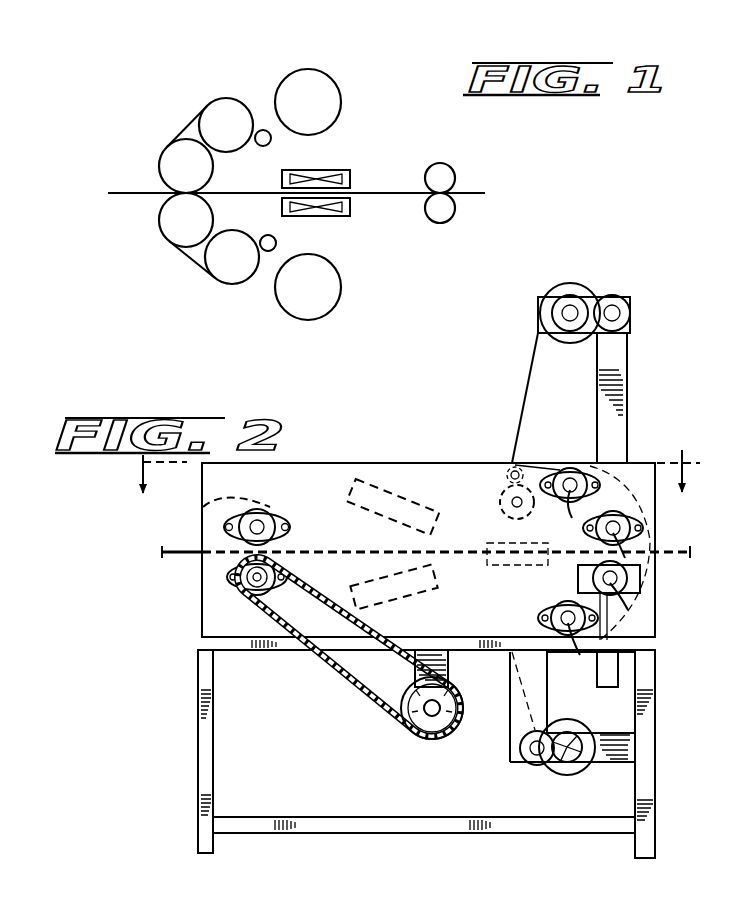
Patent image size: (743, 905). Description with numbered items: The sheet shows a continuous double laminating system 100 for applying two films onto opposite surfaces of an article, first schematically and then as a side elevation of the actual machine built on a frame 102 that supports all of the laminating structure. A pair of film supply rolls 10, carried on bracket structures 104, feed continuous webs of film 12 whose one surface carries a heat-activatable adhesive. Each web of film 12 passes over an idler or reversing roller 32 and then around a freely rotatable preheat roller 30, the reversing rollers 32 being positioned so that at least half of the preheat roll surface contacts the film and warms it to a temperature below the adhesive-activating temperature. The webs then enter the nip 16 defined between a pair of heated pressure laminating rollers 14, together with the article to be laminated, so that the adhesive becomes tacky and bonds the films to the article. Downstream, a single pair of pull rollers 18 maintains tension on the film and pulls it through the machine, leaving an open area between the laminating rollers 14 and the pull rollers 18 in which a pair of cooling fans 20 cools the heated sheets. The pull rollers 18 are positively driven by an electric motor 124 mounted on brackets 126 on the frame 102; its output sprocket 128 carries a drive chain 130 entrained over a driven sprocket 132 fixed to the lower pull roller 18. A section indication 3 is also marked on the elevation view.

In FIG. 1, the film supply rolls 10 is at (341, 102).
In FIG. 2, the film supply rolls 10 is at (545, 299).
In FIG. 1, the webs of film 12 is at (272, 116).
In FIG. 2, the webs of film 12 is at (521, 412).
In FIG. 1, the pressure laminating rollers 14 is at (176, 152).
In FIG. 1, the nip 16 is at (157, 188).
In FIG. 1, the pull rollers 18 is at (437, 163).
In FIG. 2, the pull rollers 18 is at (205, 506).
In FIG. 1, the cooling fans 20 is at (333, 170).
In FIG. 2, the cooling fans 20 is at (412, 503).
In FIG. 1, the preheat rollers 30 is at (224, 112).
In FIG. 2, the preheat rollers 30 is at (572, 468).
In FIG. 1, the idler or reversing rollers 32 is at (268, 236).
In FIG. 2, the idler or reversing rollers 32 is at (492, 491).
In FIG. 2, the section line 3- 3 is at (408, 469).
In FIG. 2, the laminating system 100 is at (126, 562).
In FIG. 2, the frame 102 is at (198, 700).
In FIG. 2, the bracket structures 104 is at (627, 360).
In FIG. 2, the electric motor 124 is at (410, 733).
In FIG. 2, the brackets 126 is at (447, 663).
In FIG. 2, the output sprocket 128 is at (455, 730).
In FIG. 2, the drive chain 130 is at (335, 664).
In FIG. 2, the driven sprocket 132 is at (243, 593).